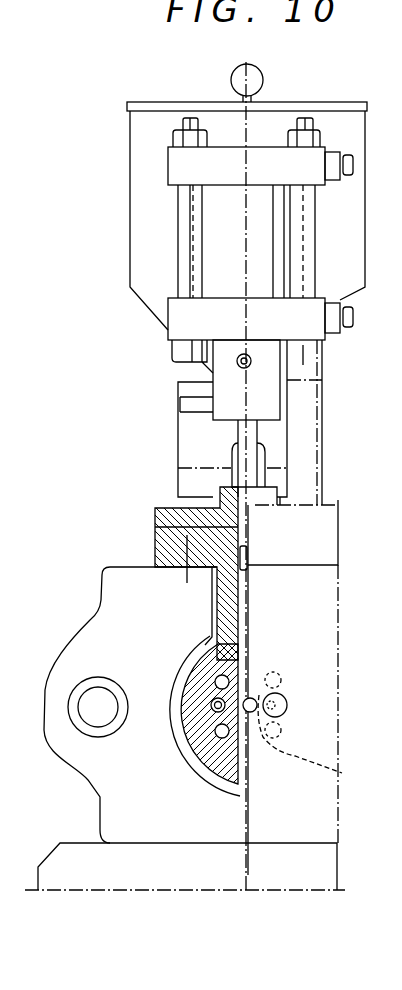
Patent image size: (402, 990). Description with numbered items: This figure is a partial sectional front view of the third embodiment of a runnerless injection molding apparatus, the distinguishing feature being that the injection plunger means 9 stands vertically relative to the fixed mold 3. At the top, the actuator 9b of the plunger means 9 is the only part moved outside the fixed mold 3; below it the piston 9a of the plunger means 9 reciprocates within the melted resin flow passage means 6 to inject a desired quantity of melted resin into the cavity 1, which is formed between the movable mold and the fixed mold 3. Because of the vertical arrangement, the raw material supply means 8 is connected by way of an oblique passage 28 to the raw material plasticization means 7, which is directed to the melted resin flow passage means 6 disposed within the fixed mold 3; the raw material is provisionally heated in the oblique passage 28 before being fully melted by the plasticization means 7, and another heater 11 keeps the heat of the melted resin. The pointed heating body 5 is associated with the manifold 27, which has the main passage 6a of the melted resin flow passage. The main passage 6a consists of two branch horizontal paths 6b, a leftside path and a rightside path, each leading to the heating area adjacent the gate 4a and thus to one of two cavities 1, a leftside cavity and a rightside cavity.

The raw material supply means 8 is at (140, 163).
The actuator 9b is at (222, 236).
The injection plunger means 9 is at (238, 432).
The piston 9a is at (161, 525).
The oblique passage 28 is at (247, 552).
The fixed mold 3 is at (97, 598).
The raw material plasticization means 7 is at (232, 605).
The melted resin flow passage means 6 is at (222, 652).
The heater 11 is at (214, 682).
The pointed heating body 5 is at (210, 706).
The cavity 1 is at (288, 707).
The gate 4a is at (280, 712).
The oblique path 6b is at (318, 741).
The manifold 27 is at (228, 760).
The main passage 6a is at (238, 772).